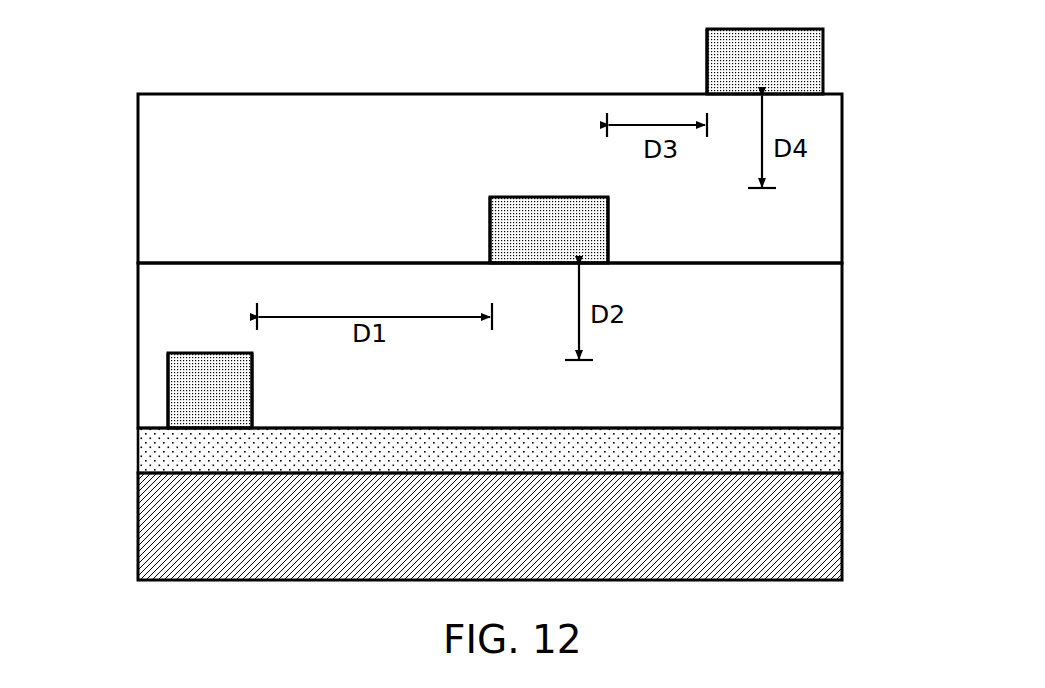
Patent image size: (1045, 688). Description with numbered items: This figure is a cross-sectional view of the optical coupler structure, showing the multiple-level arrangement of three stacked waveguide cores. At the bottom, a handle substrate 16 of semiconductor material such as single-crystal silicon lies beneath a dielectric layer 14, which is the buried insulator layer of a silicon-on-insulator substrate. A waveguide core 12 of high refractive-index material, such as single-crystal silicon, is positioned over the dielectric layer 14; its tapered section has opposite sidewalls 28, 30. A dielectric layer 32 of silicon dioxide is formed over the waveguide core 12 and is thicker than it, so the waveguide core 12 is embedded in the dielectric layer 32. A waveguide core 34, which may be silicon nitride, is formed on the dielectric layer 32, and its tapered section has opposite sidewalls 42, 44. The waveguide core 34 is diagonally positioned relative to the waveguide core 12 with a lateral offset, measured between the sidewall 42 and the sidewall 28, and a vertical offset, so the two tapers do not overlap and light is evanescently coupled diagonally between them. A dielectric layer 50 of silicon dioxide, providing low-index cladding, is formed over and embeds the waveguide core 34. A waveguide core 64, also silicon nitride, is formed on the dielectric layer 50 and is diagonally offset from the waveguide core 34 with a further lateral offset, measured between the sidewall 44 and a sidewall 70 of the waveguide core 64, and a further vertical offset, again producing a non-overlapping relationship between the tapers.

The waveguide core 12 is at (203, 380).
The dielectric layer 14 is at (797, 452).
The handle substrate 16 is at (175, 528).
The sidewall 28 is at (252, 403).
The sidewall 30 is at (168, 396).
The dielectric layer 32 is at (787, 327).
The waveguide core 34 is at (517, 222).
The sidewall 42 is at (490, 245).
The sidewall 44 is at (608, 237).
The dielectric layer 50 is at (192, 165).
The waveguide core 64 is at (787, 53).
The sidewall 70 is at (707, 63).